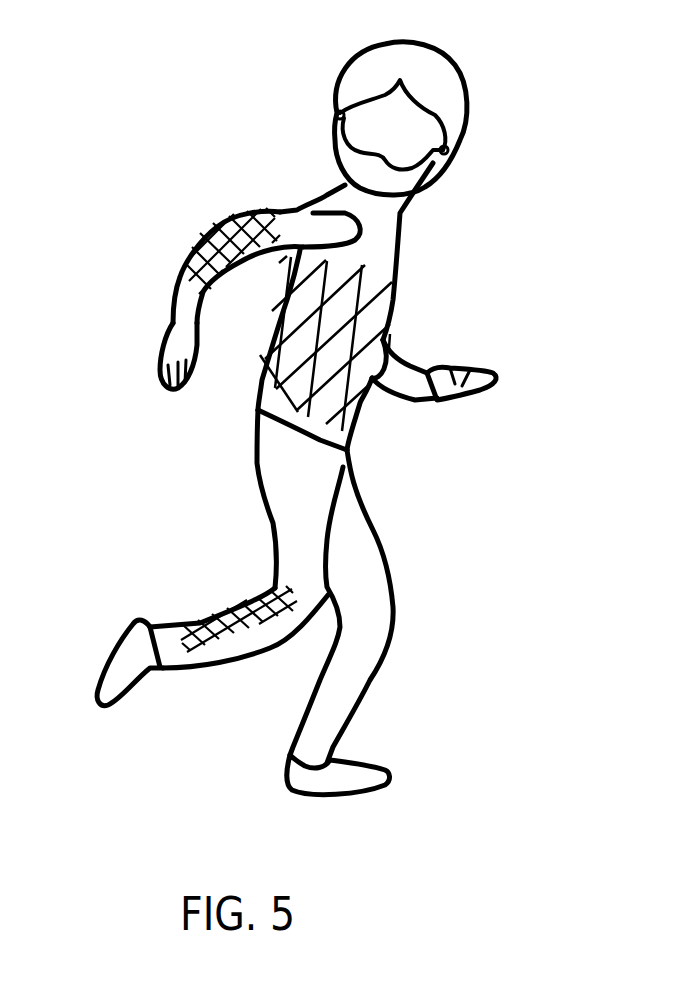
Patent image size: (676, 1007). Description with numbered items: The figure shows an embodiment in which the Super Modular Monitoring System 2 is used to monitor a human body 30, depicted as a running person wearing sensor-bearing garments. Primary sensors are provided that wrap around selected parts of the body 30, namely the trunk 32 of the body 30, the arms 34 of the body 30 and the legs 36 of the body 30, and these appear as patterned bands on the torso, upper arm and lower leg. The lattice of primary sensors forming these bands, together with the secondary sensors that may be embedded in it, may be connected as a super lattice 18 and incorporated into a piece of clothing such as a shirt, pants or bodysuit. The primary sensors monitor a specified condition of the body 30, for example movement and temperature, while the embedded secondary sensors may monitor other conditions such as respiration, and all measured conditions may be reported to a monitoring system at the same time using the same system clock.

The human body 30 is at (215, 131).
The Super Modular Monitoring System 2 is at (223, 690).
The super lattice 18 is at (213, 588).
The trunk 32 is at (372, 311).
The arms 34 is at (198, 241).
The legs 36 is at (181, 619).